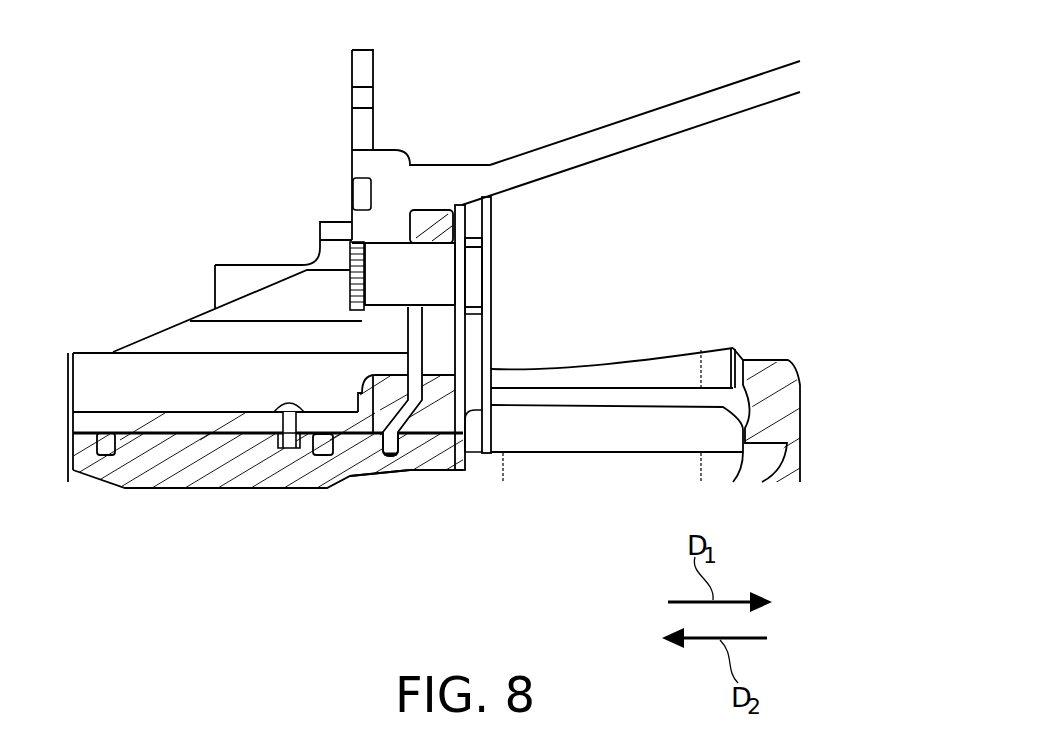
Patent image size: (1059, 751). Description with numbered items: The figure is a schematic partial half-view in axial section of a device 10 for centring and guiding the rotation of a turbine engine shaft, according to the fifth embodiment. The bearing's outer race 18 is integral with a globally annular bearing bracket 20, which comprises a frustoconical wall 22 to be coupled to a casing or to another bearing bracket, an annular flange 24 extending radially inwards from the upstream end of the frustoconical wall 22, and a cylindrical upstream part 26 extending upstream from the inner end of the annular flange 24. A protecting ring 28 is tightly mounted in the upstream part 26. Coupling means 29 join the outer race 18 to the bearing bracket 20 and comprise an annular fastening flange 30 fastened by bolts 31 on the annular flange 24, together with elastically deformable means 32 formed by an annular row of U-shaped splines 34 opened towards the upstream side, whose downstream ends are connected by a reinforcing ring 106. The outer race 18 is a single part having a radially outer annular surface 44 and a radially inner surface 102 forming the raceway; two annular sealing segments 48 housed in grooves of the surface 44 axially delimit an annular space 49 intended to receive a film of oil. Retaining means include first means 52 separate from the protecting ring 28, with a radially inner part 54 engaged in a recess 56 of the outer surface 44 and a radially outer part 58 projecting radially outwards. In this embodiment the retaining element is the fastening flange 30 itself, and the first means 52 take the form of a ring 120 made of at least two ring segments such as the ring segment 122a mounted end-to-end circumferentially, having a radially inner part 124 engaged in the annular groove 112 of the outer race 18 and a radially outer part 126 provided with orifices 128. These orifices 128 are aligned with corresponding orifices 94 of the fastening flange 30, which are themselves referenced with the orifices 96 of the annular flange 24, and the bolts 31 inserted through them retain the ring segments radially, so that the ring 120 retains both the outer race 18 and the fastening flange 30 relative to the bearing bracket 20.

The device 10 is at (184, 82).
The outer race 18 is at (269, 472).
The bearing bracket 20 is at (184, 314).
The frustoconical wall 22 is at (755, 97).
The annular flange 24 is at (401, 339).
The upstream part 26 is at (269, 472).
The protecting ring 28 is at (215, 409).
The coupling means 29 is at (511, 275).
The annular fastening flange 30 is at (446, 214).
The bolts 31 is at (395, 242).
The elastically deformable means 32 is at (606, 355).
The splines 34 is at (680, 377).
The radially outer annular surface 44 is at (215, 409).
The annular sealing segments 48 is at (105, 440).
The annular space 49 is at (153, 422).
The first means 52 is at (565, 443).
The ring 120 is at (565, 443).
The ring segment 122a is at (425, 378).
The radially inner part 54 is at (345, 513).
The radially inner part 124 is at (387, 443).
The recess 56 is at (441, 525).
The annular groove 112 is at (400, 453).
The radially outer part 58 is at (488, 381).
The radially outer part 126 is at (417, 328).
The orifices 94 is at (466, 248).
The orifices 96 is at (368, 252).
The radially inner surface 102 is at (115, 463).
The reinforcing ring 106 is at (762, 380).
The orifices 128 is at (423, 305).